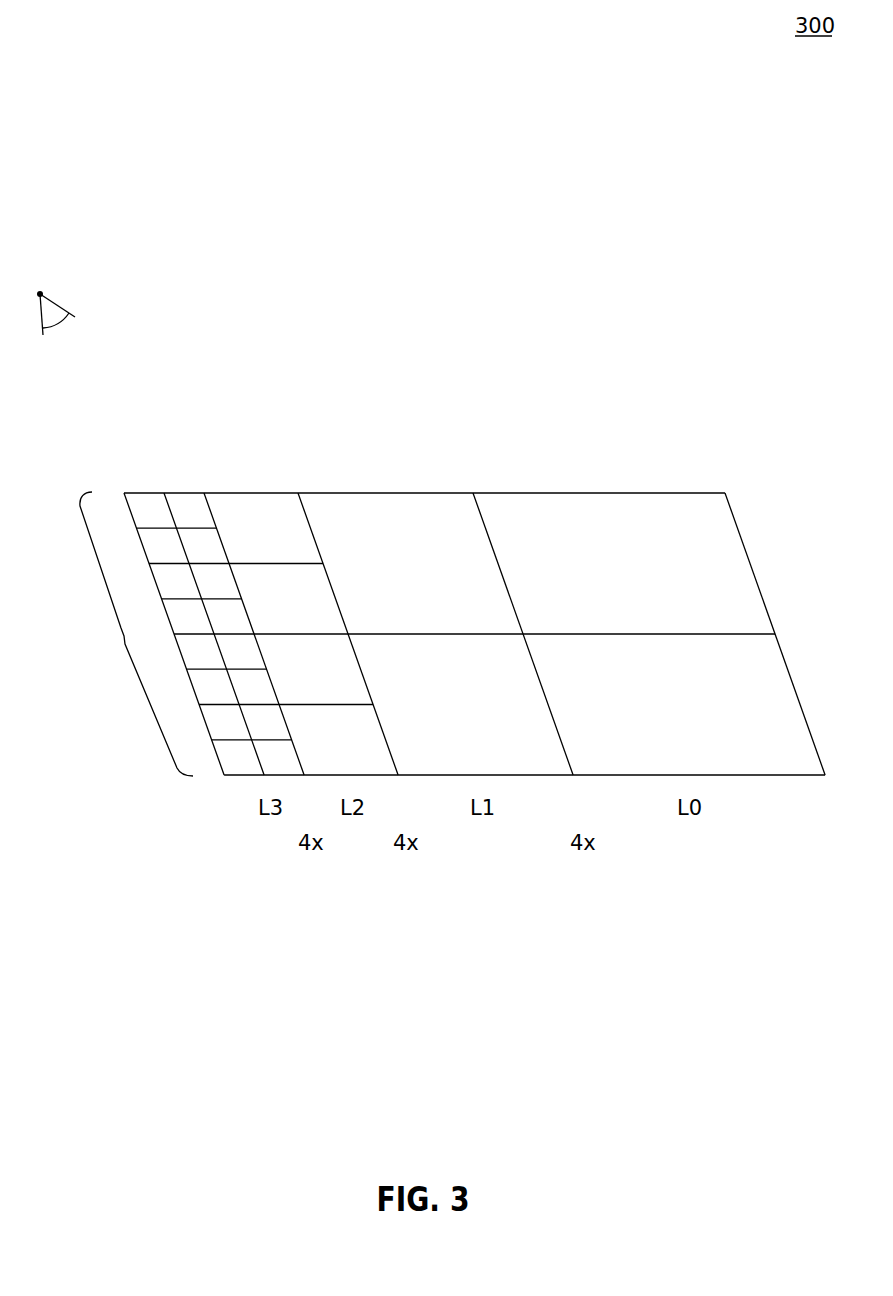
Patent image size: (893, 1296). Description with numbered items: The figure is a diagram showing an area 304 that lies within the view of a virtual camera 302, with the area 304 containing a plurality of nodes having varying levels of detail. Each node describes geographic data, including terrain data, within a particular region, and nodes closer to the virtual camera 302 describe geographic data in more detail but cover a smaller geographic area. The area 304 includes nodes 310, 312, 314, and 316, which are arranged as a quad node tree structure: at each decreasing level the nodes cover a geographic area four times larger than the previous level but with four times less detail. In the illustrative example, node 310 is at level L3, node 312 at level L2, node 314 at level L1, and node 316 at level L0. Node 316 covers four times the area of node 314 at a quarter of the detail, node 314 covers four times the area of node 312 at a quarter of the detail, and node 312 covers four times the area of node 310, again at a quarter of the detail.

The virtual camera 302 is at (46, 290).
The area 304 is at (122, 636).
The node 310 is at (140, 493).
The node 312 is at (247, 493).
The node 314 is at (388, 493).
The node 316 is at (598, 493).